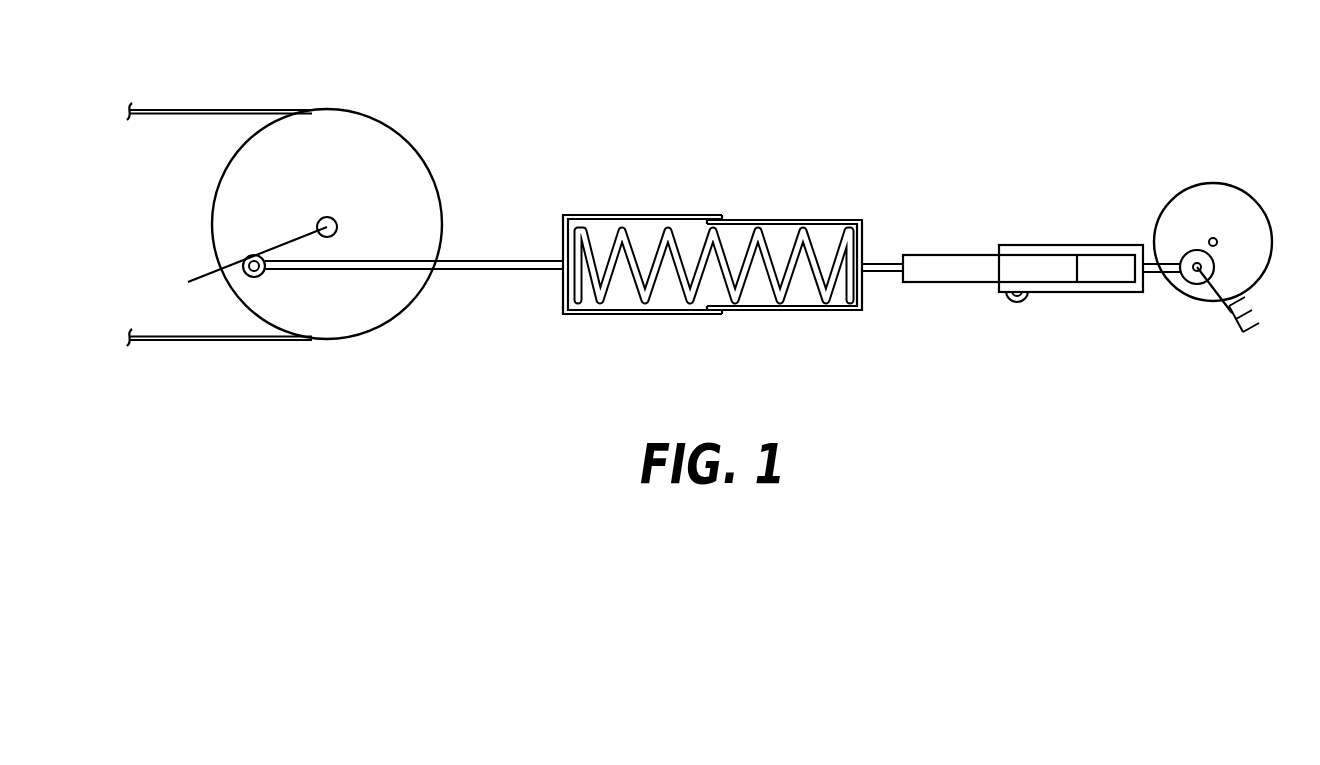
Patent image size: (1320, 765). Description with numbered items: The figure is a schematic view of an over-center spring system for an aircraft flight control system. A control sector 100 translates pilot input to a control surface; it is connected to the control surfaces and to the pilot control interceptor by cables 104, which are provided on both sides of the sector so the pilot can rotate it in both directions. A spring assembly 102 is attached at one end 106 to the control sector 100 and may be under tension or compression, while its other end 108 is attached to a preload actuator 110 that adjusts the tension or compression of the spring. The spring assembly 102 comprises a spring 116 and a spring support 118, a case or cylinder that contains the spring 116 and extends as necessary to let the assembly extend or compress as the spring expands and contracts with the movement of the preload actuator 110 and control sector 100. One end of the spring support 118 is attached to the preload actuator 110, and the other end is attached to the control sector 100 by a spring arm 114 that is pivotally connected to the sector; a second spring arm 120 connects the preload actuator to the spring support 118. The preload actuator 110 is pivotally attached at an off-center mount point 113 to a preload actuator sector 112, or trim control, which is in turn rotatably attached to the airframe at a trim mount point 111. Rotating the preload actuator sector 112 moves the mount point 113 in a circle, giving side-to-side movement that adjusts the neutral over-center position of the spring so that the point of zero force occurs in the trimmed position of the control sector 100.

The control sector 100 is at (382, 120).
The spring assembly 102 is at (707, 210).
The cables 104 is at (182, 110).
The end of spring assembly 106 is at (193, 275).
The other end of spring assembly 108 is at (923, 292).
The preload actuator 110 is at (1032, 243).
The trim mount point 111 is at (1213, 238).
The preload actuator sector 112 is at (1242, 188).
The off-center mount point 113 is at (1190, 276).
The spring arm 114 is at (498, 260).
The spring 116 is at (815, 245).
The spring support 118 is at (786, 222).
The second spring arm 120 is at (883, 264).